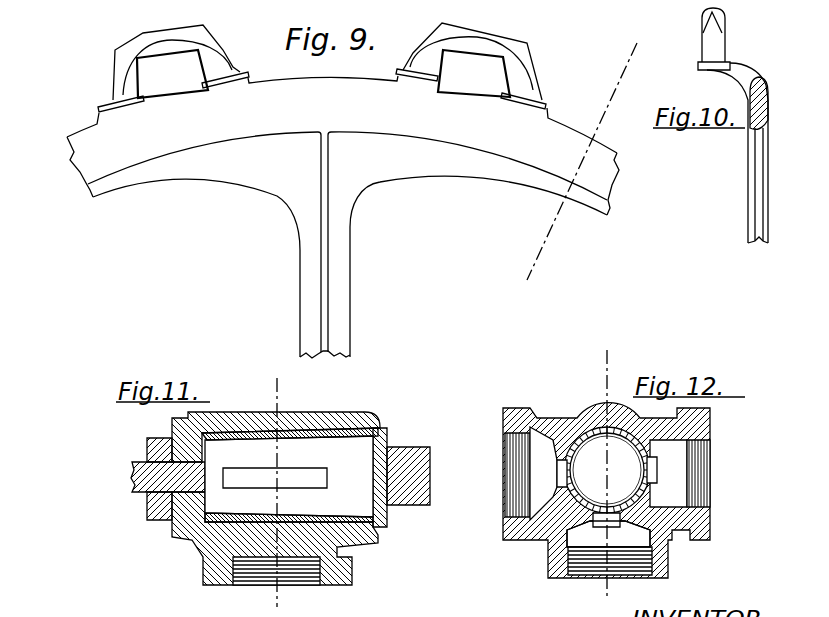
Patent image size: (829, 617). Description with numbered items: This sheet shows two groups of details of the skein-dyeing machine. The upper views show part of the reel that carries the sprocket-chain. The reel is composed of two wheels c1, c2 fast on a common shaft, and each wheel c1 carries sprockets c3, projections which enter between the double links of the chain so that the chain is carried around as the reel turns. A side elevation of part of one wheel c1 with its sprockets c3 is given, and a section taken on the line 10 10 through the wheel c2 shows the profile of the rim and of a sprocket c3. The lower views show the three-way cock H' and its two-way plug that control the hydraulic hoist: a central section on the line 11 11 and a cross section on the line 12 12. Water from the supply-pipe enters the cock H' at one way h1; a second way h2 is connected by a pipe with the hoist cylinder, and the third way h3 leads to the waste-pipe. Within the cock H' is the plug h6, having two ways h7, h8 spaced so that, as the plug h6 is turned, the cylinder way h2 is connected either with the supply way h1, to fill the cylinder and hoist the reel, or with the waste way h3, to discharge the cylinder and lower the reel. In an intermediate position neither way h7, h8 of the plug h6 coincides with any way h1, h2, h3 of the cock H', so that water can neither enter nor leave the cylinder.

In FIG. 9, the wheel of the reel c1 is at (360, 278).
In FIG. 10, the wheel of the reel c2 is at (768, 100).
In FIG. 9, the sprocket c3 is at (222, 42).
In FIG. 10, the sprocket c3 is at (727, 38).
In FIG. 12, the way of the three-way cock h1 is at (658, 468).
In FIG. 11, the way of the three-way cock h2 is at (285, 530).
In FIG. 12, the way of the three-way cock h2 is at (614, 528).
In FIG. 12, the way of the three-way cock h3 is at (557, 468).
In FIG. 11, the plug h6 is at (384, 432).
In FIG. 12, the plug h6 is at (600, 446).
In FIG. 11, the way of the plug h7 is at (247, 518).
In FIG. 12, the way of the plug h7 is at (605, 507).
In FIG. 11, the way of the plug h8 is at (307, 478).
In FIG. 12, the way of the plug h8 is at (647, 468).
In FIG. 11, the three-way cock H' is at (280, 498).
In FIG. 12, the three-way cock H' is at (606, 490).
In FIG. 9, the section line 10 10 is at (569, 171).
In FIG. 12, the section line 11 11 is at (596, 476).
In FIG. 11, the section line 12 12 is at (266, 483).